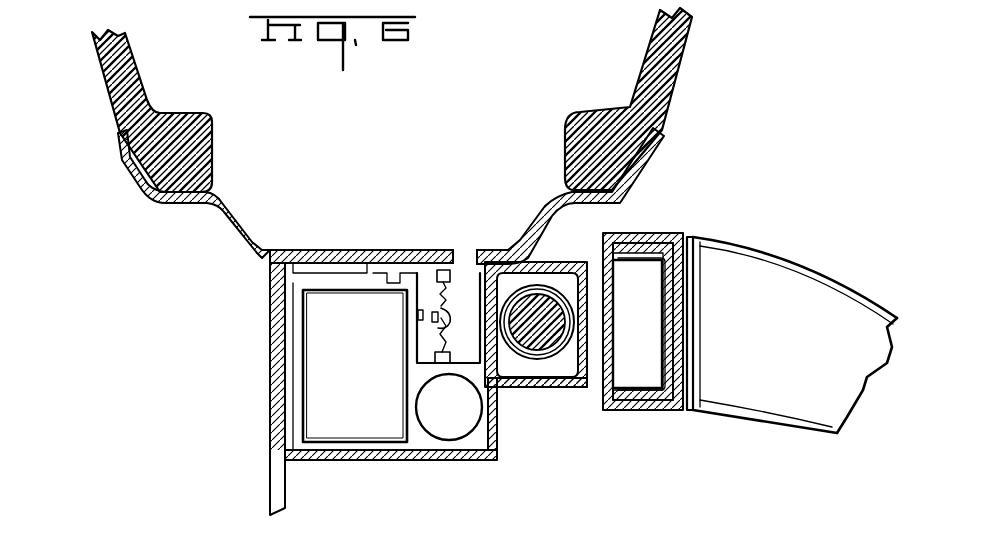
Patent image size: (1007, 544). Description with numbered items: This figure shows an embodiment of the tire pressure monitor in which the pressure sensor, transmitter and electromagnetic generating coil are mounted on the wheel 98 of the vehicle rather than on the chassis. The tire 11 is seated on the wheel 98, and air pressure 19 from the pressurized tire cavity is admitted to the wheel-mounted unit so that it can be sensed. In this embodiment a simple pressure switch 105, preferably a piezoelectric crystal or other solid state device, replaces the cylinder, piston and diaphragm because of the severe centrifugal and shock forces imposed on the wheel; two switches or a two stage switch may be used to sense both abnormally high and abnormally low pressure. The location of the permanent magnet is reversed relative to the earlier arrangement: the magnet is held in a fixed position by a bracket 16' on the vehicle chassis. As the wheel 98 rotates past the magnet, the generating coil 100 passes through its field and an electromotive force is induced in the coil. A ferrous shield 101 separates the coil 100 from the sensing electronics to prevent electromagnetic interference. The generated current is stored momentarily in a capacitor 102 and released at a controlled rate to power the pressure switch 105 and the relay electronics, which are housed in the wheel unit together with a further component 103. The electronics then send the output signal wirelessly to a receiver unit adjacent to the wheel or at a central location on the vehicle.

The tire 11 is at (112, 100).
The air pressure 19 is at (465, 268).
The wheel 98 is at (267, 316).
The bracket 16' is at (792, 314).
The electromagnetic coil 100 is at (525, 358).
The ferrous shield 101 is at (570, 384).
The capacitor 102 is at (457, 437).
The rectangular member 103 is at (353, 438).
The pressure switch 105 is at (454, 316).